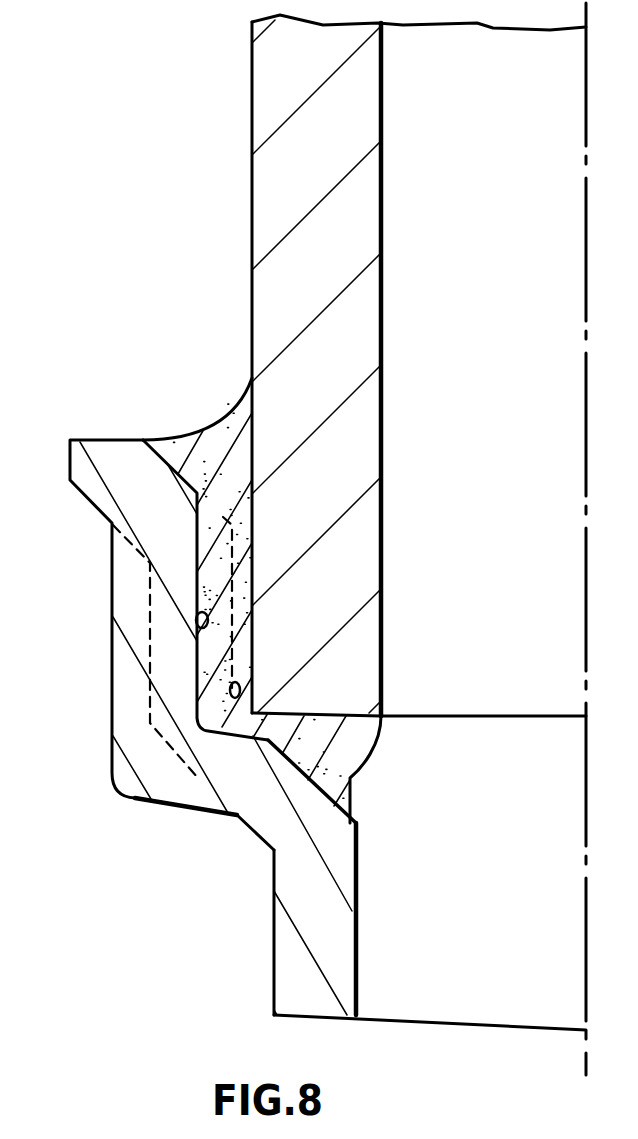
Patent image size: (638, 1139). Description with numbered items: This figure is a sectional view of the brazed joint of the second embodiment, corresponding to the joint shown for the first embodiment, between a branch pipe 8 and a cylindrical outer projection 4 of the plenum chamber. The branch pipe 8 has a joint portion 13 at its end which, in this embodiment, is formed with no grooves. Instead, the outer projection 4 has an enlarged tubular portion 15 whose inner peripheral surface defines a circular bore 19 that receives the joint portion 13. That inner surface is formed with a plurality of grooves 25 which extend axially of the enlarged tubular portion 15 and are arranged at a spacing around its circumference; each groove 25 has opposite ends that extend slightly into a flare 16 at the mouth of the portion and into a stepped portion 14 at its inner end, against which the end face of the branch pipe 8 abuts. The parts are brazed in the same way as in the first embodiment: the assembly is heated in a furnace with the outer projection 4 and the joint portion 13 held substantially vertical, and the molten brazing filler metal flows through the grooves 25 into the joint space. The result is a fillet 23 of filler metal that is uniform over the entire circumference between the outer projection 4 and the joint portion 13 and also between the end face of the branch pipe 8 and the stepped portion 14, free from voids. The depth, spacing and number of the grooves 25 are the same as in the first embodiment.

The outer projection 4 is at (292, 947).
The branch pipe 8 is at (258, 111).
The joint portion 13 is at (373, 610).
The stepped portion 14 is at (322, 789).
The enlarged tubular portion 15 is at (147, 682).
The flare 16 is at (117, 497).
The circular bore 19 is at (228, 694).
The fillet 23 is at (214, 437).
The grooves 25 is at (196, 632).